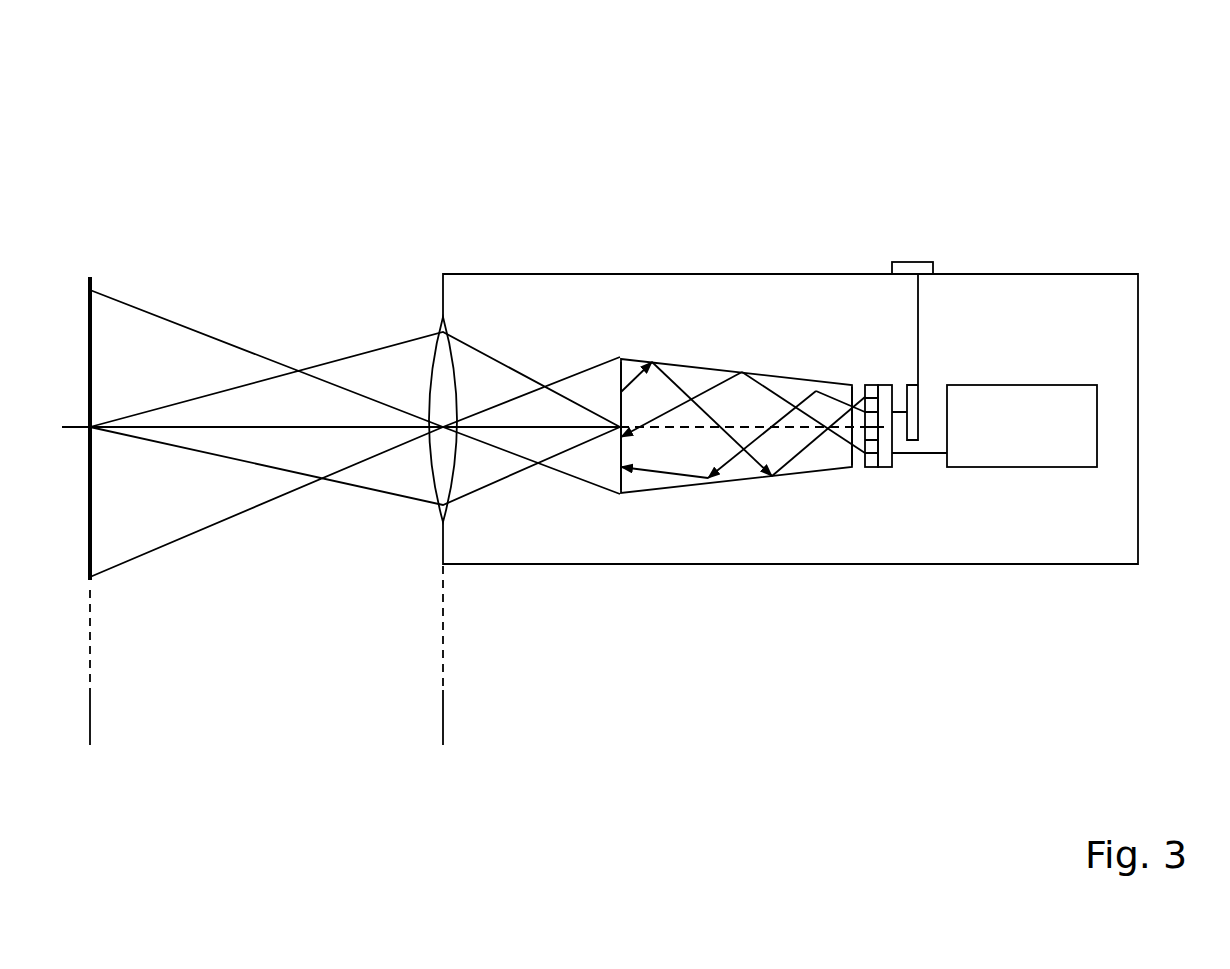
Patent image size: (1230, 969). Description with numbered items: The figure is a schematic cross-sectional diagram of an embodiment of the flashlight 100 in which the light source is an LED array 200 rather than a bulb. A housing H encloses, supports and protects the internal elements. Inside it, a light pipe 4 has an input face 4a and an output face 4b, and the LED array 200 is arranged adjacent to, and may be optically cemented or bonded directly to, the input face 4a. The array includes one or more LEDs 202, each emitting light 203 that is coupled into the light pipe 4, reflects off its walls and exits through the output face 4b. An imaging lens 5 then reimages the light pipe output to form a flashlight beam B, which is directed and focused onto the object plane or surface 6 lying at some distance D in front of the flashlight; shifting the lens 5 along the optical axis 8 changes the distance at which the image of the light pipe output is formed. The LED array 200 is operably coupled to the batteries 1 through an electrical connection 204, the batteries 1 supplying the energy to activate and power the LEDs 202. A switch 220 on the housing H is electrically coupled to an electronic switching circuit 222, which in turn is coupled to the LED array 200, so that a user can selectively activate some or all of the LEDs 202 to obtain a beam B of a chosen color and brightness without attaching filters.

The flashlight 100 is at (602, 393).
The object plane or surface 6 is at (88, 300).
The flashlight beam B is at (293, 300).
The optical axis 8 is at (266, 428).
The imaging lens 5 is at (428, 343).
The distance D is at (90, 719).
The housing H is at (1080, 273).
The light pipe 4 is at (735, 402).
The input face 4a is at (852, 394).
The output face 4b is at (612, 392).
The light 203 is at (745, 372).
The LED array 200 is at (785, 540).
The LEDs 202 is at (882, 485).
The electrical connection 204 is at (920, 455).
The switch 220 is at (910, 261).
The electronic switching circuit 222 is at (922, 397).
The batteries 1 is at (1032, 443).